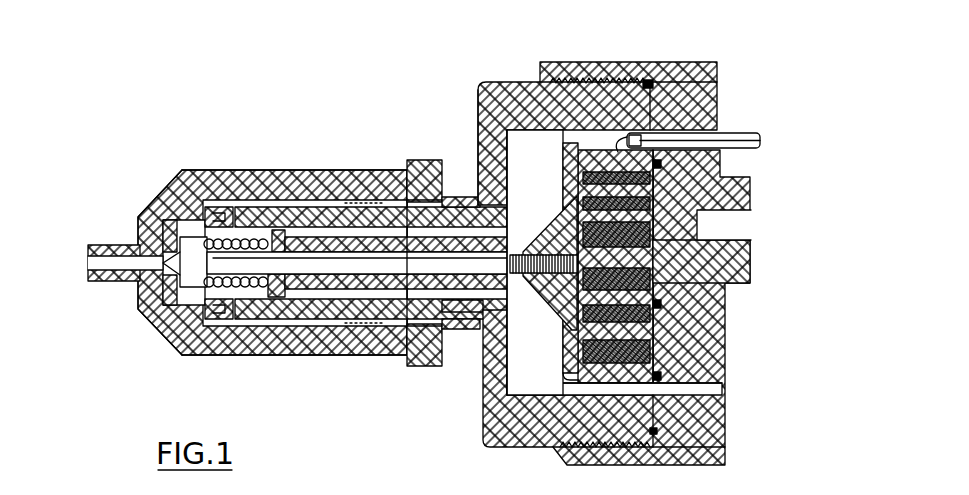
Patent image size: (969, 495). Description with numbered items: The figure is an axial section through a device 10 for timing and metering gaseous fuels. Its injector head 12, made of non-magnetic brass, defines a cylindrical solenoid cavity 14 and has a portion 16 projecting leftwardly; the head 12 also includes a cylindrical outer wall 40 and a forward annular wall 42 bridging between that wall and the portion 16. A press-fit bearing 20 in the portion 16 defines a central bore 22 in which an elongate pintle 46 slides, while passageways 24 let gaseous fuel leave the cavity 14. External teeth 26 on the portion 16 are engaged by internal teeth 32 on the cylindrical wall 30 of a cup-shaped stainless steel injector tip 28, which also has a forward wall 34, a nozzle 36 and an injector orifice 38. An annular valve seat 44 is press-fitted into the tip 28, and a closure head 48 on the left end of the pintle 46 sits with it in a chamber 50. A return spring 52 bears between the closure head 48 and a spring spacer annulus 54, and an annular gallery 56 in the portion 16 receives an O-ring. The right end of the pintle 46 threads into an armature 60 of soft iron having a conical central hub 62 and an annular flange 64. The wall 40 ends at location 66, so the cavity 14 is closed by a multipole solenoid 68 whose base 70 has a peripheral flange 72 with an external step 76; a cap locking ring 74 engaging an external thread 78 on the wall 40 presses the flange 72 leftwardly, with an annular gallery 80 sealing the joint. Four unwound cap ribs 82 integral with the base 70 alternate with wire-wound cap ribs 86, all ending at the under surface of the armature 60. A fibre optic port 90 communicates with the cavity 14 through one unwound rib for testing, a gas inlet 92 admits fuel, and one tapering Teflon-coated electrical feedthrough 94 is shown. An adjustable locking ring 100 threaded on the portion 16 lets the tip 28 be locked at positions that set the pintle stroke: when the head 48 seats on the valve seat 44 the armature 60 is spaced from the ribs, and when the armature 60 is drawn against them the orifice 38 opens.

The device for timing and metering gaseous fuels 10 is at (452, 247).
The injector head 12 is at (480, 92).
The solenoid cavity 14 is at (522, 358).
The portion 16 is at (312, 340).
The press-fit bearing 20 is at (337, 240).
The central bore 22 is at (518, 280).
The passageways 24 is at (457, 197).
The external teeth 26 is at (470, 315).
The injector tip 28 is at (165, 330).
The cylindrical wall 30 is at (245, 340).
The internal teeth 32 is at (393, 340).
The forward wall 34 is at (138, 232).
The nozzle 36 is at (102, 283).
The injector orifice 38 is at (88, 262).
The cylindrical outer wall 40 is at (525, 430).
The forward annular wall 42 is at (493, 173).
The valve seat 44 is at (195, 305).
The pintle 46 is at (300, 218).
The closure head 48 is at (190, 245).
The chamber 50 is at (210, 326).
The return spring 52 is at (270, 300).
The spring spacer annulus 54 is at (305, 262).
The annular gallery 56 is at (225, 206).
The armature 60 is at (565, 157).
The conical central hub 62 is at (558, 225).
The annular flange 64 is at (560, 368).
The location 66 is at (725, 418).
The multipole solenoid 68 is at (726, 335).
The base 70 is at (725, 311).
The peripheral flange 72 is at (710, 100).
The cap locking ring 74 is at (700, 62).
The external step 76 is at (725, 450).
The external thread 78 is at (605, 72).
The annular gallery 80 is at (655, 80).
The unwound cap ribs 82 is at (735, 160).
The wound cap ribs 86 is at (598, 392).
The fibre optic port 90 is at (748, 240).
The gas inlet 92 is at (725, 392).
The electrical feedthrough 94 is at (745, 132).
The adjustable locking ring 100 is at (422, 170).